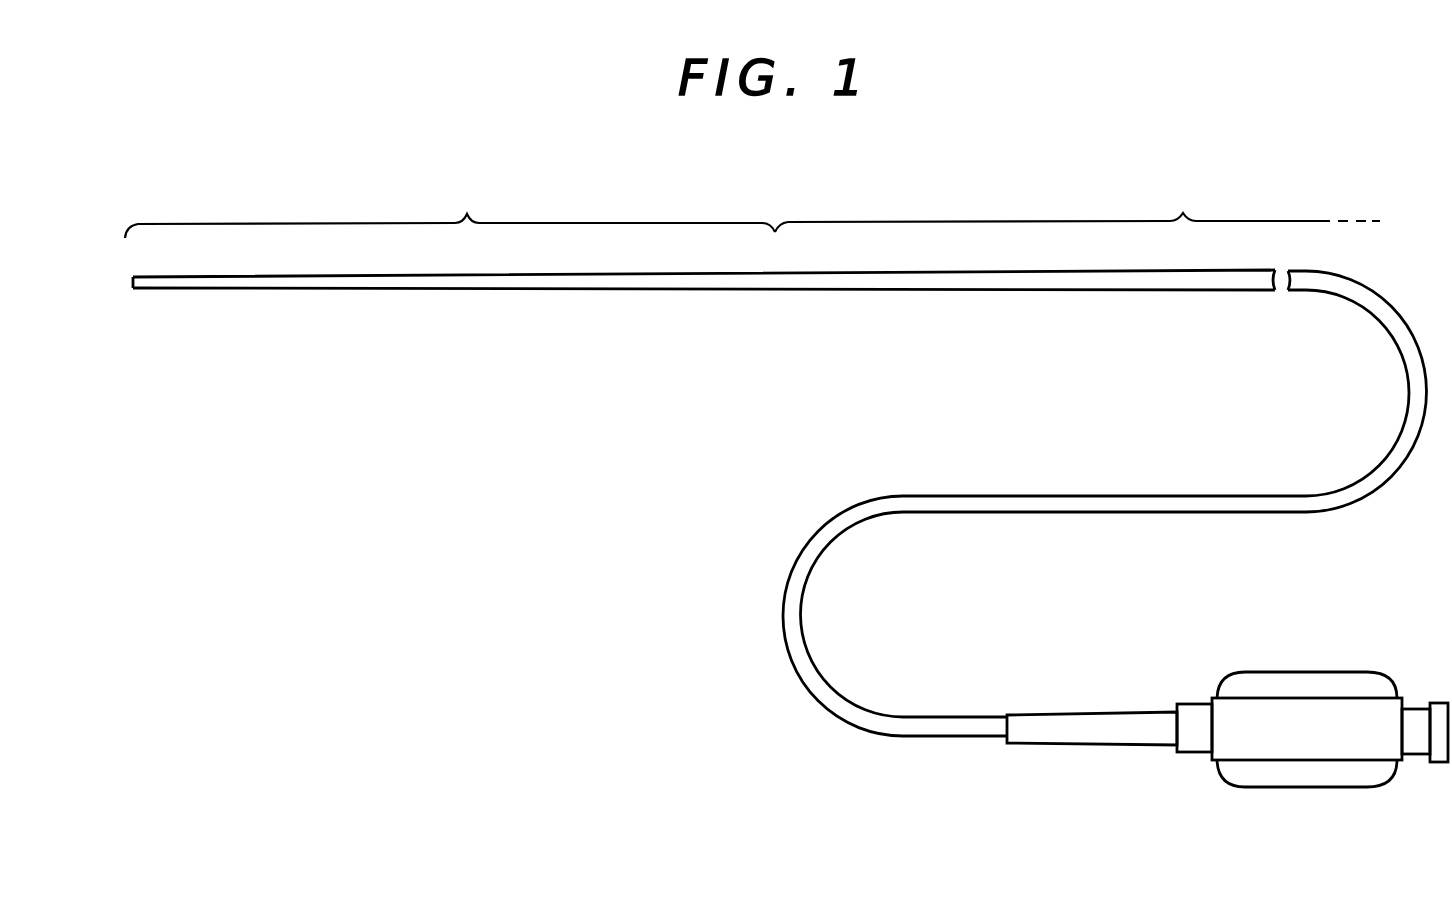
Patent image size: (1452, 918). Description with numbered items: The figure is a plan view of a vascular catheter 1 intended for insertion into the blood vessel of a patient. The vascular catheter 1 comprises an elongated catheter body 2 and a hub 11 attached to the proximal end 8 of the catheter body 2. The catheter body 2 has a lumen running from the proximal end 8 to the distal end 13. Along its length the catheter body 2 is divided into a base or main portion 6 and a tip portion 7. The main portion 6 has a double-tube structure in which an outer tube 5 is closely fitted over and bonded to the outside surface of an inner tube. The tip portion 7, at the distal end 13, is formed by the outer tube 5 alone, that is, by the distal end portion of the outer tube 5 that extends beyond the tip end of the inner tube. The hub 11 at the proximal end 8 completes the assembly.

The vascular catheter 1 is at (605, 438).
The catheter body 2 is at (1042, 512).
The outer tube 5 is at (427, 285).
The main portion 6 is at (1077, 202).
The tip portion 7 is at (450, 208).
The proximal end 8 is at (998, 732).
The hub 11 is at (1295, 775).
The distal end 13 is at (122, 294).